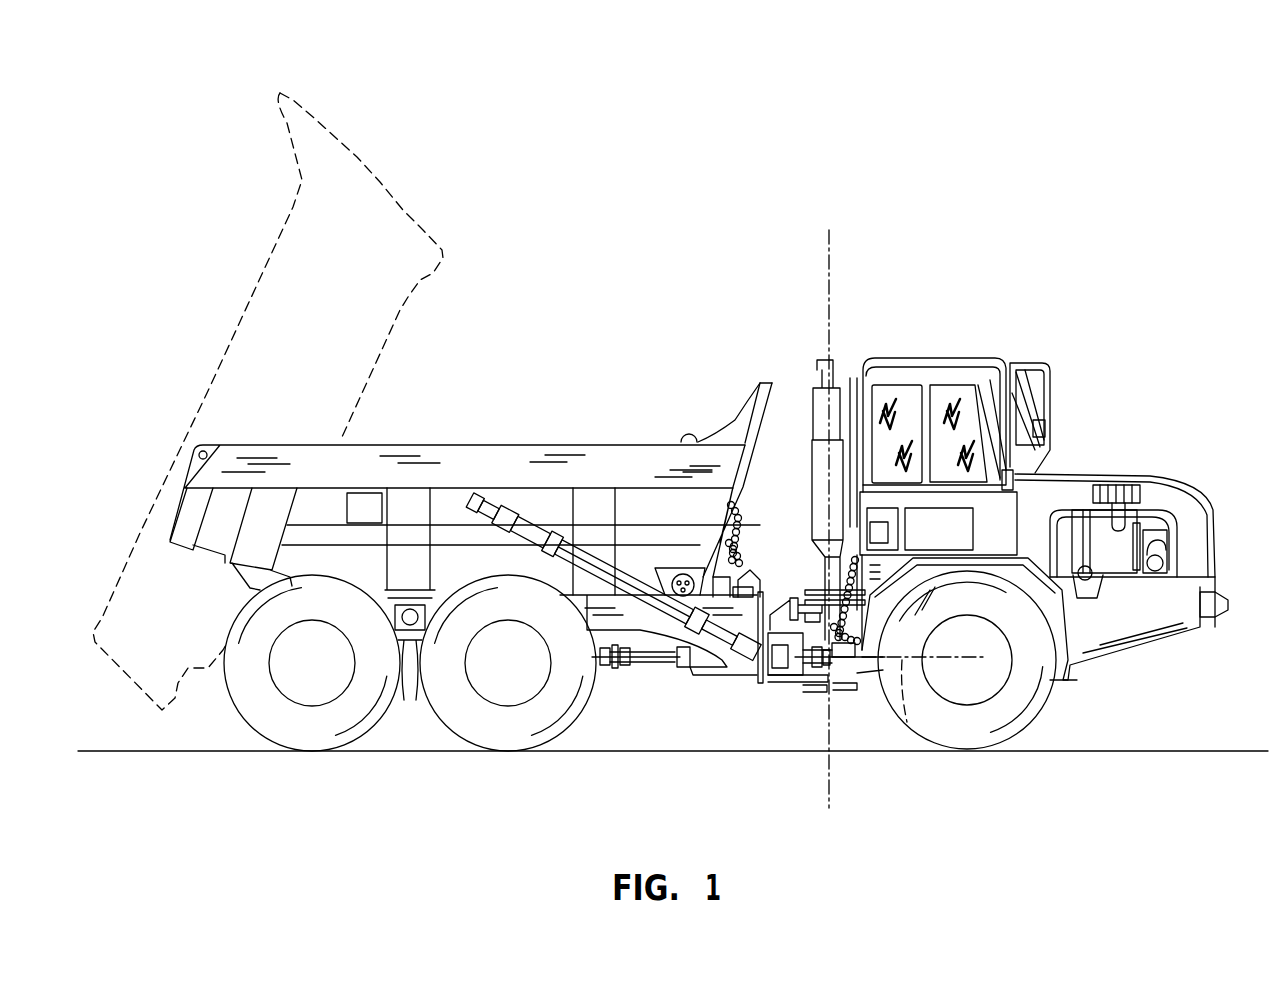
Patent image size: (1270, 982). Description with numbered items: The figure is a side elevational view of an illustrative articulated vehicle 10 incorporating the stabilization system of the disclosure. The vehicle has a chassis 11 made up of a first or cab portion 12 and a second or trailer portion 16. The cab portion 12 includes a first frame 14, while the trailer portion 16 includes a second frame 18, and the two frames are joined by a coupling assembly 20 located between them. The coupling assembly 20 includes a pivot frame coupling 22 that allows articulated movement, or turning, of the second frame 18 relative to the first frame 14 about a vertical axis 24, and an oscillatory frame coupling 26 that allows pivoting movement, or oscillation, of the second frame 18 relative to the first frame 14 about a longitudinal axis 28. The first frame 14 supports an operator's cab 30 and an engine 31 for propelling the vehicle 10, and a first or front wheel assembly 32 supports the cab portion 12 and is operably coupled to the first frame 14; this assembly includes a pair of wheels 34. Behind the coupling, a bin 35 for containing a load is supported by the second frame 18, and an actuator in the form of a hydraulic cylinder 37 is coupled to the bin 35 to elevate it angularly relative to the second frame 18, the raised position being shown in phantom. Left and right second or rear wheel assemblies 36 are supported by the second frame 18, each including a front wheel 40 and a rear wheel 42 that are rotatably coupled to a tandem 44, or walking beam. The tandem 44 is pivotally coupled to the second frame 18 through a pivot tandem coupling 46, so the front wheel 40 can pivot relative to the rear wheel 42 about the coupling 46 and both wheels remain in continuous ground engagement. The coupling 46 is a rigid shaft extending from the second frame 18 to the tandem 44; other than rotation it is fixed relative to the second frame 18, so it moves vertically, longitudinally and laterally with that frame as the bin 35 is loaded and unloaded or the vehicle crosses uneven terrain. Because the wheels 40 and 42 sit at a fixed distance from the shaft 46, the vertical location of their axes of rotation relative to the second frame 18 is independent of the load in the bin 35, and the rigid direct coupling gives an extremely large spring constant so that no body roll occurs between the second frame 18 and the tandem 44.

The articulated vehicle 10 is at (1153, 147).
The chassis 11 is at (1168, 775).
The cab portion 12 is at (1034, 284).
The first frame 14 is at (1108, 667).
The trailer portion 16 is at (577, 228).
The second frame 18 is at (630, 615).
The coupling assembly 20 is at (744, 710).
The pivot frame coupling 22 is at (842, 686).
The vertical axis 24 is at (828, 275).
The oscillatory frame coupling 26 is at (805, 673).
The longitudinal axis 28 is at (907, 725).
The operator's cab 30 is at (938, 357).
The engine 31 is at (1098, 515).
The front wheel assembly 32 is at (1046, 740).
The wheels 34 is at (975, 737).
The bin 35 is at (622, 465).
The rear wheel assemblies 36 is at (410, 758).
The hydraulic cylinder 37 is at (528, 522).
The front wheel 40 is at (508, 736).
The rear wheel 42 is at (293, 728).
The tandem 44 is at (406, 690).
The pivot tandem coupling 46 is at (404, 600).